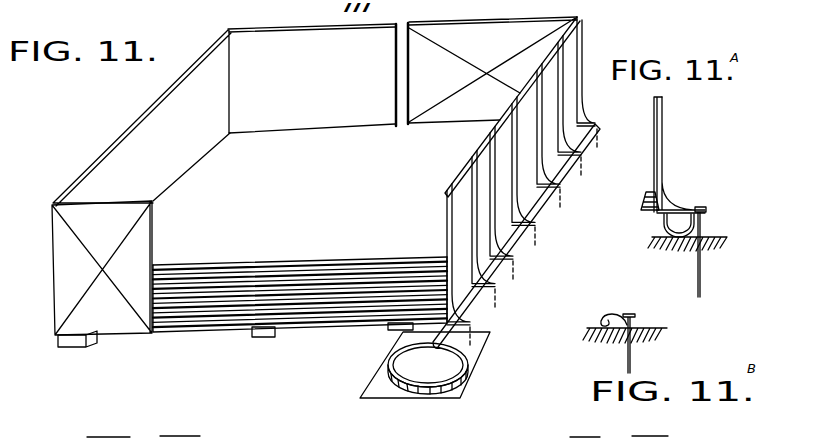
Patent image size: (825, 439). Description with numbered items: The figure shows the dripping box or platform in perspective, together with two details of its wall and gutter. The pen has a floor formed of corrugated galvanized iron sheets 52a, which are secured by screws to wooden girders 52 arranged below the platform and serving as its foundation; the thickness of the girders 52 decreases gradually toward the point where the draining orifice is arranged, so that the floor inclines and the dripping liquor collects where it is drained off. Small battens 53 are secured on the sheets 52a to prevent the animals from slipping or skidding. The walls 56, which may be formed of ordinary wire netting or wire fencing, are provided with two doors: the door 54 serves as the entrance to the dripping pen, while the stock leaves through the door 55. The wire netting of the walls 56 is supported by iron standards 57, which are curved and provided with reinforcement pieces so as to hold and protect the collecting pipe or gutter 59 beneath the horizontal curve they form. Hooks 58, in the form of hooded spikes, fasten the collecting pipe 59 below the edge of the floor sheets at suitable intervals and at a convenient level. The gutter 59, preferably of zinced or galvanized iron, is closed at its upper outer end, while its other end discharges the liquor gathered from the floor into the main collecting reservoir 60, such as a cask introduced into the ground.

In FIG. 11, the wooden girders 52 is at (82, 353).
In FIG. 11, the corrugated galvanized iron sheets 52a is at (328, 182).
In FIG. 11, the battens 53 is at (274, 337).
In FIG. 11A, the battens 53 is at (648, 212).
In FIG. 11, the entrance door 54 is at (102, 268).
In FIG. 11, the exit door 55 is at (493, 70).
In FIG. 11, the walls 56 is at (154, 109).
In FIG. 11A, the walls 56 is at (653, 162).
In FIG. 11, the iron standards 57 is at (537, 97).
In FIG. 11A, the iron standards 57 is at (665, 150).
In FIG. 11, the hooks 58 is at (593, 134).
In FIG. 11A, the hooks 58 is at (702, 222).
In FIG. 11B, the hooks 58 is at (632, 316).
In FIG. 11, the collecting pipe or gutter 59 is at (441, 342).
In FIG. 11A, the collecting pipe or gutter 59 is at (680, 242).
In FIG. 11B, the collecting pipe or gutter 59 is at (613, 316).
In FIG. 11, the main collecting reservoir 60 is at (416, 371).